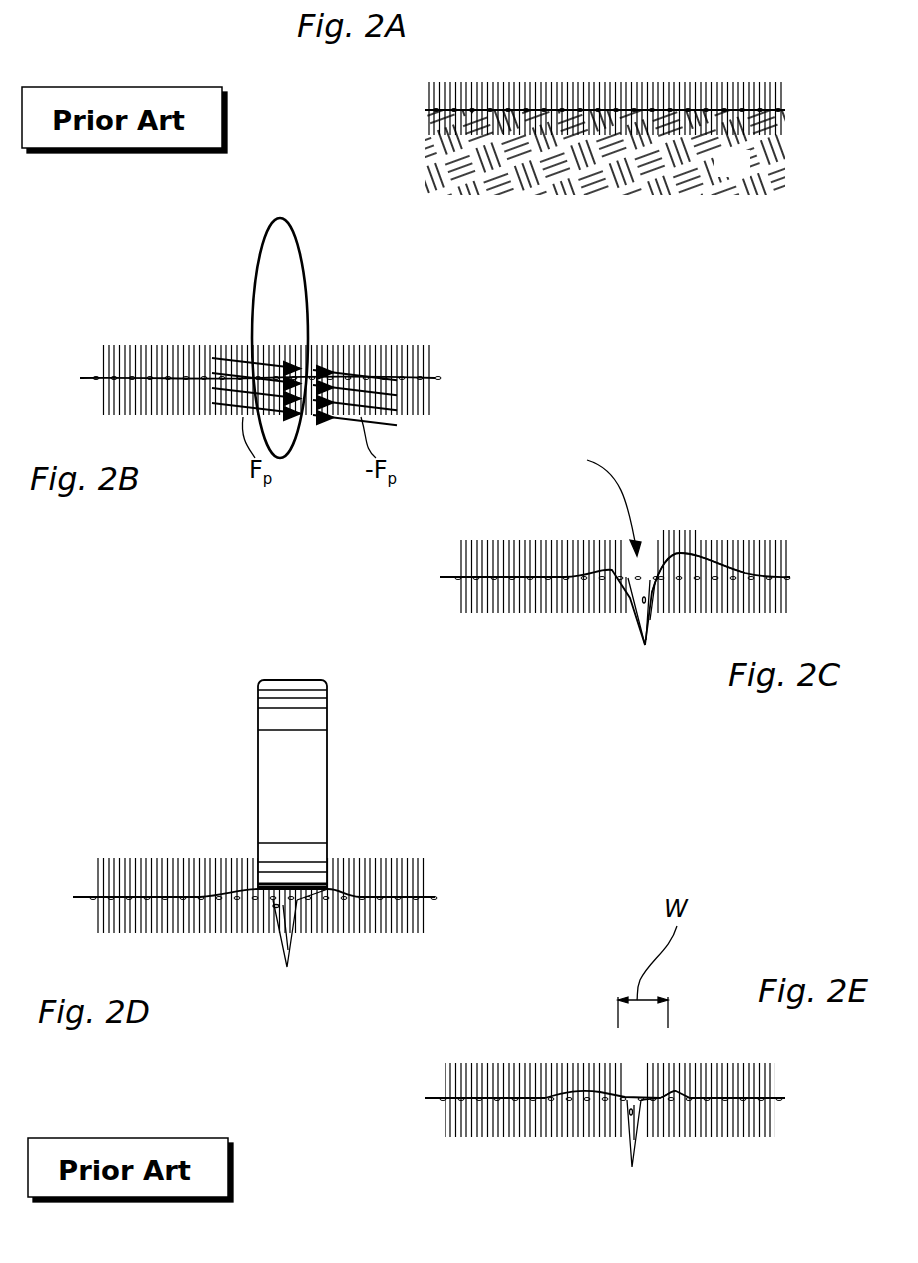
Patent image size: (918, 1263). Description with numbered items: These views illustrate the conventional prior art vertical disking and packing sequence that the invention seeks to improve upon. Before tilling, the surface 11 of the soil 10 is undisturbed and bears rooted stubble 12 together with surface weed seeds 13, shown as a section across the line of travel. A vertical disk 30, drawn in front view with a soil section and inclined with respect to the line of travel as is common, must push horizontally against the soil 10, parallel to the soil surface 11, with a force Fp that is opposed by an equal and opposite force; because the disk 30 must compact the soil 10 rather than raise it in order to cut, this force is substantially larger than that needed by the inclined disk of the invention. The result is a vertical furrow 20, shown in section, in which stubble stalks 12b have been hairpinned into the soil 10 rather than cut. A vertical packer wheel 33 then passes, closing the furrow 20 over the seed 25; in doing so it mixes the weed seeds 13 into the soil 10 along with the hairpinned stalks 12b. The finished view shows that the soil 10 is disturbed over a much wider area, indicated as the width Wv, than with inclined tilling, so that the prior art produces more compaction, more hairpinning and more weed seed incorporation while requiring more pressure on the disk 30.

In FIG. 2A, the soil 10 is at (746, 176).
In FIG. 2B, the soil 10 is at (90, 404).
In FIG. 2C, the soil 10 is at (453, 606).
In FIG. 2D, the soil 10 is at (89, 929).
In FIG. 2E, the soil 10 is at (439, 1132).
In FIG. 2A, the soil surface 11 is at (437, 110).
In FIG. 2B, the soil surface 11 is at (80, 378).
In FIG. 2C, the soil surface 11 is at (440, 577).
In FIG. 2D, the soil surface 11 is at (75, 897).
In FIG. 2E, the soil surface 11 is at (428, 1098).
In FIG. 2A, the rooted stubble 12 is at (633, 93).
In FIG. 2B, the rooted stubble 12 is at (183, 345).
In FIG. 2C, the rooted stubble 12 is at (537, 545).
In FIG. 2D, the rooted stubble 12 is at (173, 862).
In FIG. 2E, the rooted stubble 12 is at (527, 1067).
In FIG. 2C, the hairpinned stalks 12b is at (647, 573).
In FIG. 2D, the hairpinned stalks 12b is at (293, 903).
In FIG. 2E, the hairpinned stalks 12b is at (633, 1100).
In FIG. 2A, the weed seeds 13 is at (457, 108).
In FIG. 2B, the weed seeds 13 is at (124, 380).
In FIG. 2C, the weed seeds 13 is at (480, 580).
In FIG. 2D, the weed seeds 13 is at (118, 897).
In FIG. 2E, the weed seeds 13 is at (470, 1100).
In FIG. 2C, the vertical furrow 20 is at (600, 502).
In FIG. 2C, the seed 25 is at (640, 615).
In FIG. 2D, the seed 25 is at (284, 903).
In FIG. 2E, the seed 25 is at (622, 1130).
In FIG. 2B, the vertical disk 30 is at (292, 338).
In FIG. 2D, the vertical packer wheel 33 is at (309, 812).